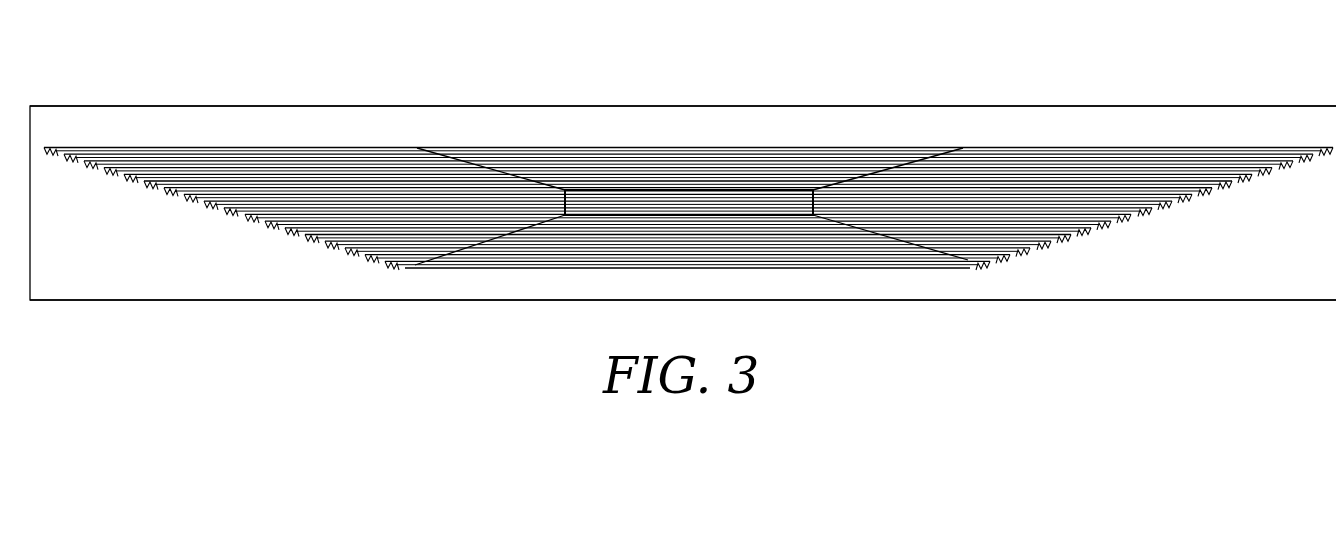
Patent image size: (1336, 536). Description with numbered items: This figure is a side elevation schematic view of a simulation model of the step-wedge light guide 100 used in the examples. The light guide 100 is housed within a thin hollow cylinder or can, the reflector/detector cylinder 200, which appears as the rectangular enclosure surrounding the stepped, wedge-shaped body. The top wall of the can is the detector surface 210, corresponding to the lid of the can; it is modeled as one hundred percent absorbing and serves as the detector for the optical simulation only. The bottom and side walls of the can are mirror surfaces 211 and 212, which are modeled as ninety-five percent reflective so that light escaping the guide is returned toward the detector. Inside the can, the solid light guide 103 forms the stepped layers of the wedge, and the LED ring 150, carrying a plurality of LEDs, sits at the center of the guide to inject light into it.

The step-wedge light guide 100 is at (505, 147).
The solid light guide 103 is at (1022, 185).
The LED ring 150 is at (765, 192).
The reflector/detector cylinder 200 is at (357, 122).
The detector surface 210 is at (625, 105).
The mirror surface 211 is at (525, 302).
The mirror surface 212 is at (1335, 268).